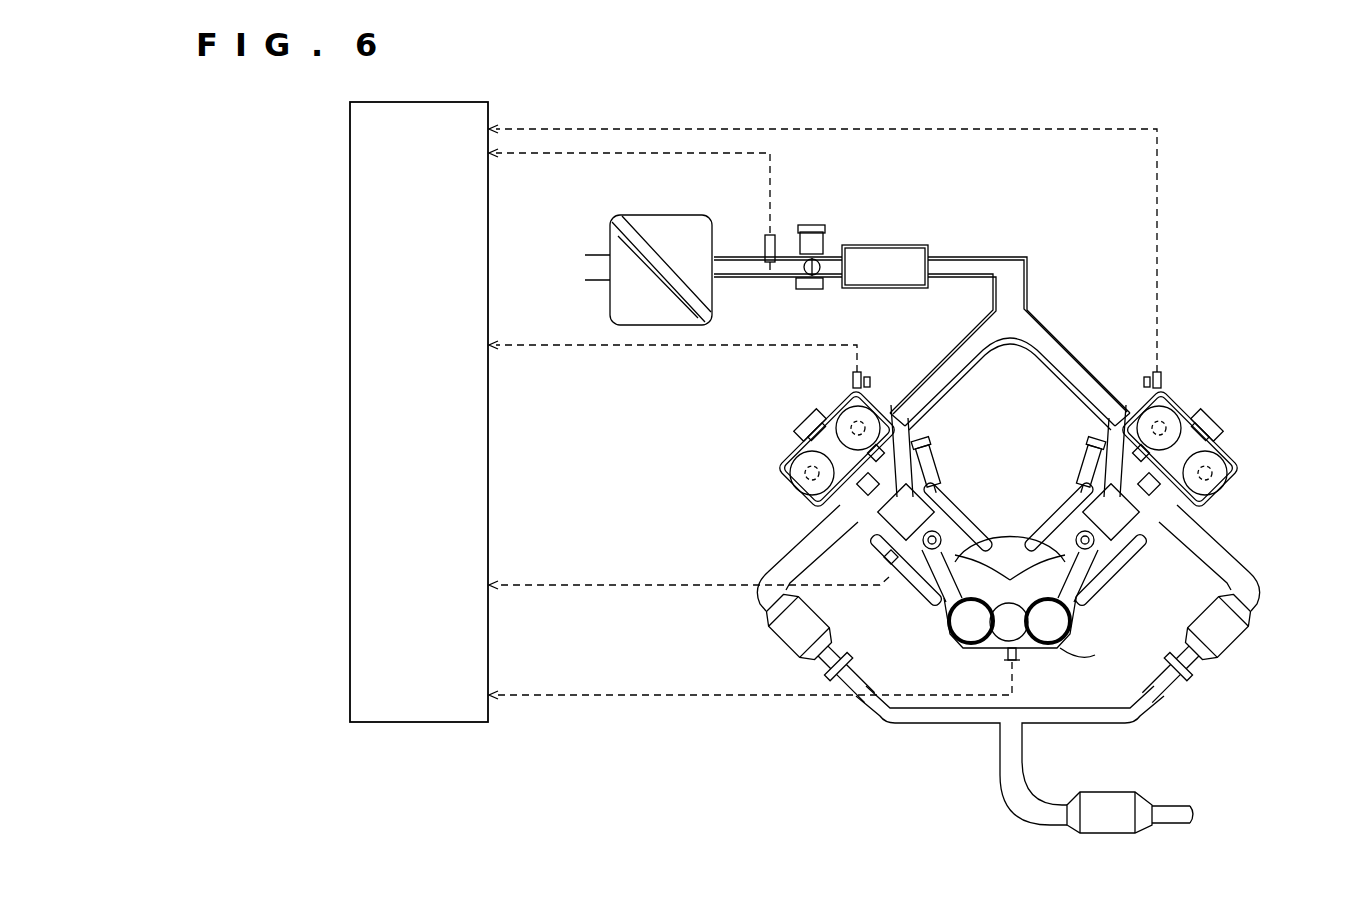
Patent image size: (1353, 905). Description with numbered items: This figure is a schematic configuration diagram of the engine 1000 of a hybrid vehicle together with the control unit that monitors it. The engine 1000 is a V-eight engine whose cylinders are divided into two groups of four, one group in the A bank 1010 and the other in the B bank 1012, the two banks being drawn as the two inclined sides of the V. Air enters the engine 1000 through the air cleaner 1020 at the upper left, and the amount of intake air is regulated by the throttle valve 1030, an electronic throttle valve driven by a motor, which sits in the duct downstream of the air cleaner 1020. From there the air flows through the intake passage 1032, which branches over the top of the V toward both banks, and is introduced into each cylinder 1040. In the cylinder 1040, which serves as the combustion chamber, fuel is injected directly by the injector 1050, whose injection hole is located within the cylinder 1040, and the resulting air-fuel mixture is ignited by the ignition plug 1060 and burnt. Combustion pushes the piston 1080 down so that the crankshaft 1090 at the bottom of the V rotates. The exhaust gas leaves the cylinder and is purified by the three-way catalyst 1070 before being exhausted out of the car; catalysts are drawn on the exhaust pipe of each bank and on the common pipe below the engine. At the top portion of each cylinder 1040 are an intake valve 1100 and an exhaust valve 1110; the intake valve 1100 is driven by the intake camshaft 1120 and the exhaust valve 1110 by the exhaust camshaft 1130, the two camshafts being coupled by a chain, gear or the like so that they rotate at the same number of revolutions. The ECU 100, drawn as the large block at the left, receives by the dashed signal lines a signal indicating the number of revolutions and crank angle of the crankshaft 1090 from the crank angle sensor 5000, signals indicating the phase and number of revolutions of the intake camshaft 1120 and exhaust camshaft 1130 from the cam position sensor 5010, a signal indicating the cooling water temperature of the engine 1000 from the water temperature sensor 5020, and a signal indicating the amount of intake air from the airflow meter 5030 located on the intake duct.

The ECU 100 is at (350, 598).
The engine 1000 is at (1063, 248).
The A bank 1010 is at (732, 433).
The B bank 1012 is at (1268, 387).
The air cleaner 1020 is at (652, 215).
The throttle valve 1030 is at (830, 262).
The intake passage 1032 is at (1006, 253).
The cylinder 1040 is at (947, 490).
The injector 1050 is at (928, 438).
The ignition plug 1060 is at (798, 417).
The three-way catalyst 1070 is at (785, 636).
The piston 1080 is at (1045, 530).
The crankshaft 1090 is at (1062, 650).
The intake valve 1100 is at (893, 415).
The exhaust valve 1110 is at (808, 513).
The intake camshaft 1120 is at (846, 393).
The exhaust camshaft 1130 is at (810, 475).
The crank angle sensor 5000 is at (1022, 668).
The cam position sensor 5010 is at (870, 372).
The water temperature sensor 5020 is at (893, 568).
The airflow meter 5030 is at (780, 243).